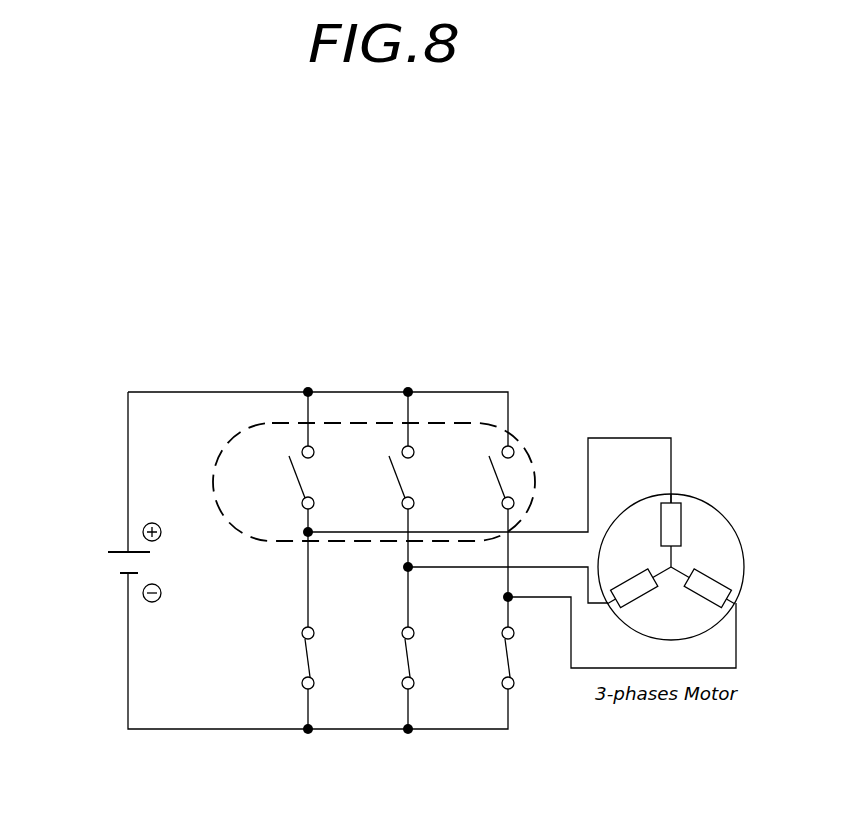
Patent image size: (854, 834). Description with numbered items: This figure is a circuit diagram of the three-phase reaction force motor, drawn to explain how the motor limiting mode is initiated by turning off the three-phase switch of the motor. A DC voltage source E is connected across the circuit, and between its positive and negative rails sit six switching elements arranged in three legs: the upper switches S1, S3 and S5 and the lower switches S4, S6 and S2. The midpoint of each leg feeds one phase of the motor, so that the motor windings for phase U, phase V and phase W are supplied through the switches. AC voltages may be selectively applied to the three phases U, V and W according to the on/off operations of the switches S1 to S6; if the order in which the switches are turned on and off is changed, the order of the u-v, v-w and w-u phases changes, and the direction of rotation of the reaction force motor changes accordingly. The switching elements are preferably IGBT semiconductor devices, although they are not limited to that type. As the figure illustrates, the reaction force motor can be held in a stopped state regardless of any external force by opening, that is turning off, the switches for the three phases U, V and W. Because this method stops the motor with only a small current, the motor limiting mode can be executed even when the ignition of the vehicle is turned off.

The DC voltage source E is at (91, 562).
The switch S1 is at (288, 477).
The switch S2 is at (486, 658).
The switch S3 is at (389, 477).
The switch S4 is at (285, 658).
The switch S5 is at (489, 477).
The switch S6 is at (386, 658).
The phase u U is at (494, 502).
The phase v V is at (542, 593).
The phase w W is at (633, 613).